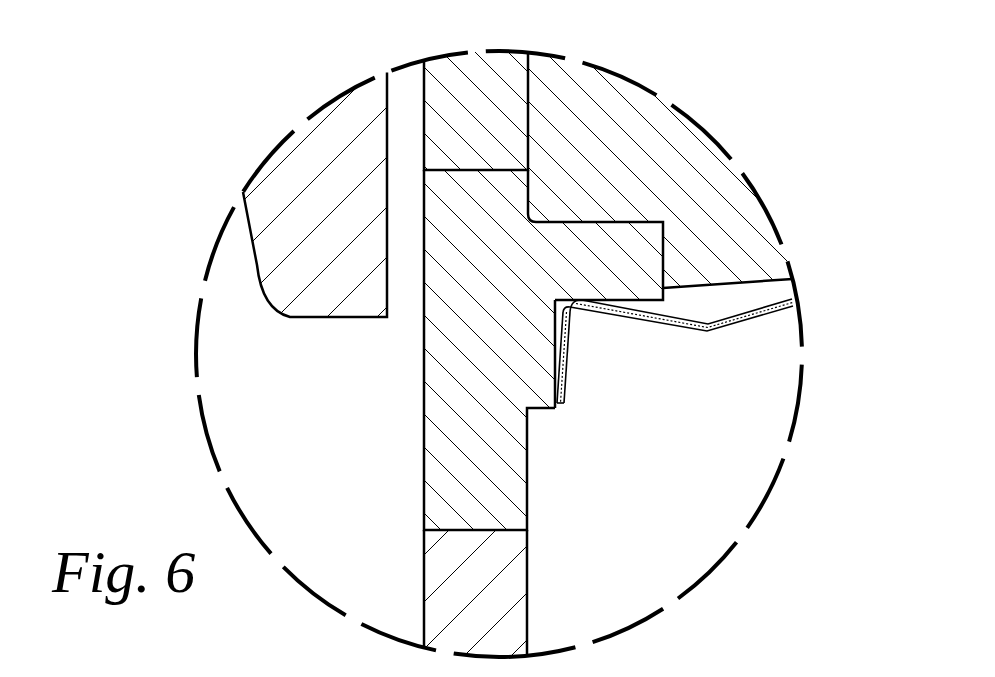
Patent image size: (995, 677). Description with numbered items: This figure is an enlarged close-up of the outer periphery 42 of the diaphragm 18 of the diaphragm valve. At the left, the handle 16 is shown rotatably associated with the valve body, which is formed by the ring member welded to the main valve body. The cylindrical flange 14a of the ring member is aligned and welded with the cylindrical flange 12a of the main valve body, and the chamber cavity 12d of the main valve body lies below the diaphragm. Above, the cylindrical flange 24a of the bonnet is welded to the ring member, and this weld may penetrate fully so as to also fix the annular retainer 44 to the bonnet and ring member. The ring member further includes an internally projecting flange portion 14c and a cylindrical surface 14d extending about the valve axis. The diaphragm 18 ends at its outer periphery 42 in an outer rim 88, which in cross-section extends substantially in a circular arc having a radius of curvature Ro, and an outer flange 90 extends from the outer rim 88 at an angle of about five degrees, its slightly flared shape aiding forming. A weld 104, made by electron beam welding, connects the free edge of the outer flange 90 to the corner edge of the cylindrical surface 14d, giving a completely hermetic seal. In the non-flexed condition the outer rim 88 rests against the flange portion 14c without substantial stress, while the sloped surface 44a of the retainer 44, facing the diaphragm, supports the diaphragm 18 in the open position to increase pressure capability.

The handle 16 is at (324, 144).
The cylindrical flange 24a is at (453, 87).
The cylindrical flange 14a is at (450, 423).
The internally projecting flange portion 14c is at (647, 233).
The cylindrical surface 14d is at (572, 330).
The annular retainer 44 is at (713, 187).
The sloped surface 44a is at (720, 290).
The diaphragm 18 is at (738, 328).
The outer rim 88 is at (563, 299).
The radius of curvature Ro is at (584, 314).
The outer flange 90 is at (568, 370).
The weld 104 is at (565, 405).
The outer periphery 42 is at (700, 398).
The cylindrical flange 12a is at (442, 565).
The chamber cavity 12d is at (673, 543).